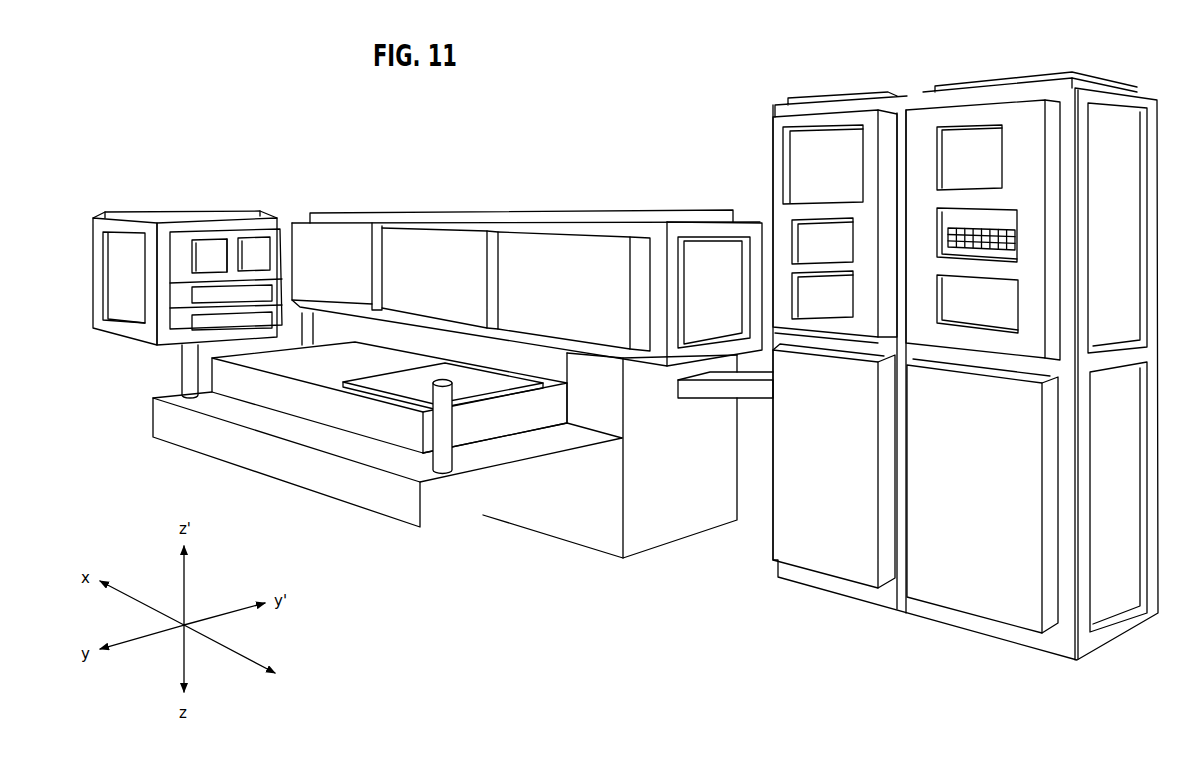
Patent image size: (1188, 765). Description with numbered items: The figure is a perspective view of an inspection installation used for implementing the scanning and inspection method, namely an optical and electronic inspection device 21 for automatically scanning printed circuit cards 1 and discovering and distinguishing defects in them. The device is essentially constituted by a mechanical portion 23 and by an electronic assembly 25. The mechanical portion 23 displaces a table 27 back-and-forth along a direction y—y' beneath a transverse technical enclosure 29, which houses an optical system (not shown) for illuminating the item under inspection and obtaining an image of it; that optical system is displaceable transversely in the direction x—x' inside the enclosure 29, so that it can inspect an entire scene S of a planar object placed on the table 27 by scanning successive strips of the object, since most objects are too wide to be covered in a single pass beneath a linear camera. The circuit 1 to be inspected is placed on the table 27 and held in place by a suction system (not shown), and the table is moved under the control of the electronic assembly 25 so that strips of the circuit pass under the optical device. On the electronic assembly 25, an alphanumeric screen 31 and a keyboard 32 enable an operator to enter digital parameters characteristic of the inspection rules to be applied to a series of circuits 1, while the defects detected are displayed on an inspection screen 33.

The printed circuit card 1 is at (467, 380).
The scene S is at (434, 350).
The optical and electronic inspection device 21 is at (667, 625).
The mechanical portion 23 is at (176, 454).
The electronic assembly 25 is at (921, 48).
The table 27 is at (370, 420).
The transverse technical enclosure 29 is at (551, 198).
The alphanumeric screen 31 is at (958, 143).
The keyboard 32 is at (986, 227).
The inspection screen 33 is at (828, 142).